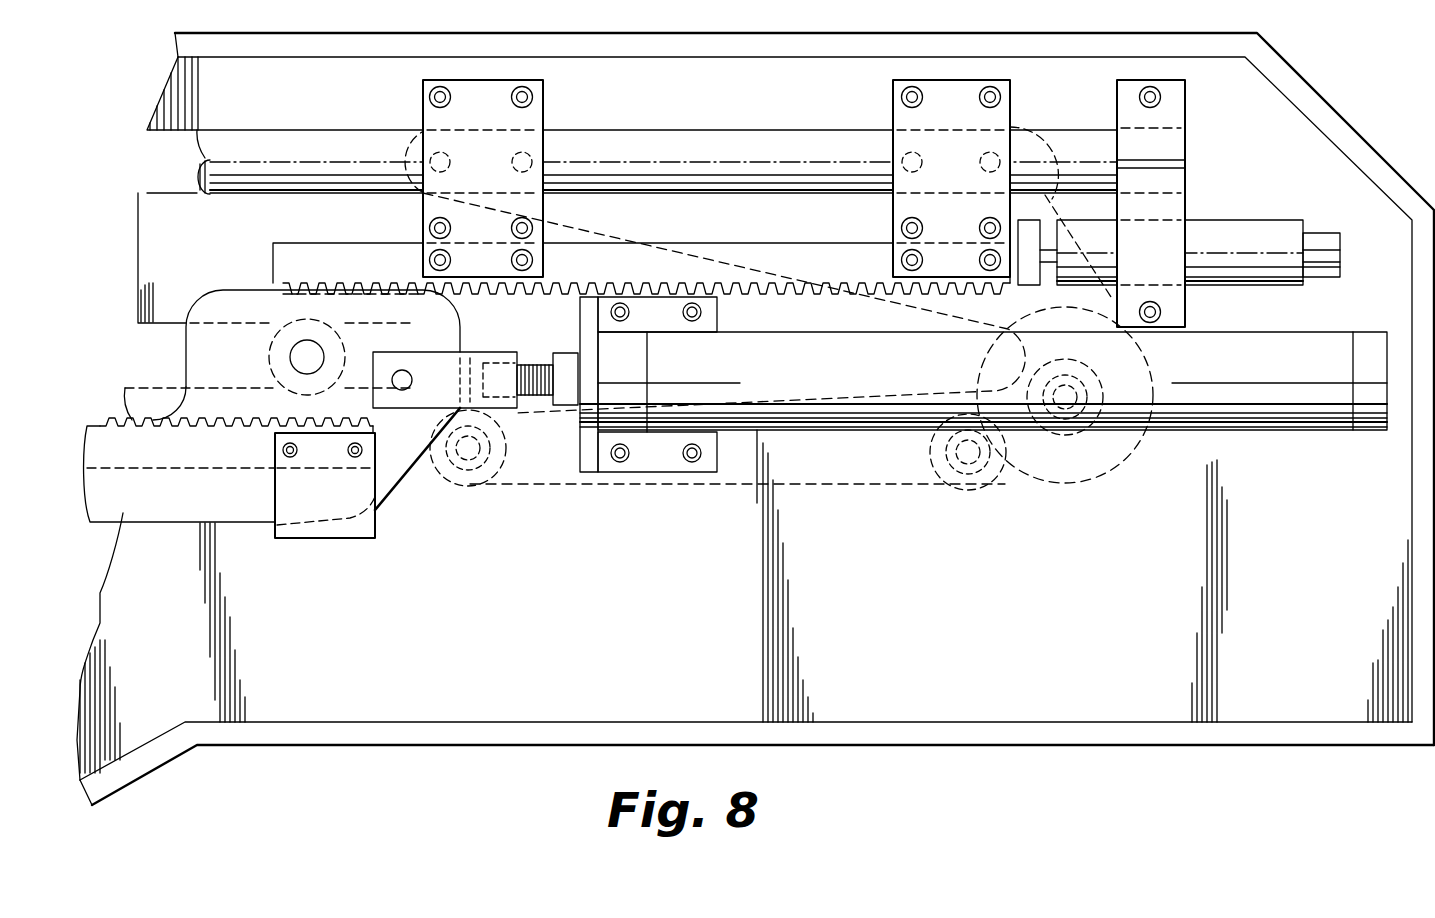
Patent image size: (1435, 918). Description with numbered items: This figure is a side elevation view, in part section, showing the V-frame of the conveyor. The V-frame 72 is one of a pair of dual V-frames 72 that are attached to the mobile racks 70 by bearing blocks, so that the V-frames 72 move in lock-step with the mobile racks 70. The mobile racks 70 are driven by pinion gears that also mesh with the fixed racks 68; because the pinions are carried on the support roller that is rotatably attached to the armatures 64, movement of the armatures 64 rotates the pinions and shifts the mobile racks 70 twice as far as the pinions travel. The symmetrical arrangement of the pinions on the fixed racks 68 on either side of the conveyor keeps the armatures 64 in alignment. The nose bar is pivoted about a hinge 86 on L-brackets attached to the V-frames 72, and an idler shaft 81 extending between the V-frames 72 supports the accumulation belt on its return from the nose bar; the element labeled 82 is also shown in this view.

The armature 64 is at (398, 462).
The fixed rack 68 is at (175, 470).
The mobile rack 70 is at (803, 293).
The V-frame 72 is at (905, 393).
The idler shaft 81 is at (485, 477).
The pulley 82 is at (992, 482).
The hinge 86 is at (1128, 443).